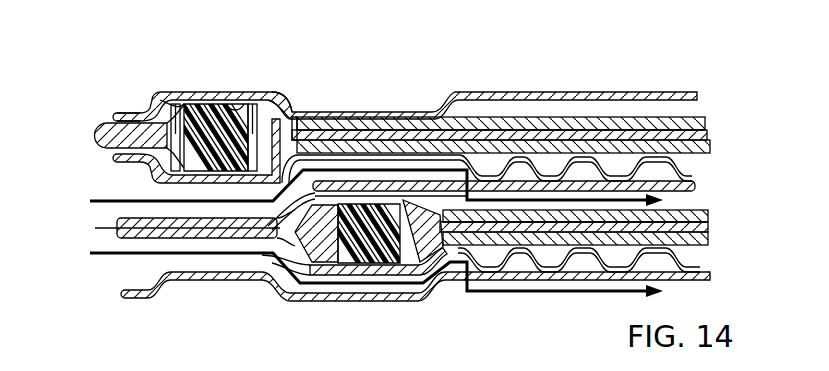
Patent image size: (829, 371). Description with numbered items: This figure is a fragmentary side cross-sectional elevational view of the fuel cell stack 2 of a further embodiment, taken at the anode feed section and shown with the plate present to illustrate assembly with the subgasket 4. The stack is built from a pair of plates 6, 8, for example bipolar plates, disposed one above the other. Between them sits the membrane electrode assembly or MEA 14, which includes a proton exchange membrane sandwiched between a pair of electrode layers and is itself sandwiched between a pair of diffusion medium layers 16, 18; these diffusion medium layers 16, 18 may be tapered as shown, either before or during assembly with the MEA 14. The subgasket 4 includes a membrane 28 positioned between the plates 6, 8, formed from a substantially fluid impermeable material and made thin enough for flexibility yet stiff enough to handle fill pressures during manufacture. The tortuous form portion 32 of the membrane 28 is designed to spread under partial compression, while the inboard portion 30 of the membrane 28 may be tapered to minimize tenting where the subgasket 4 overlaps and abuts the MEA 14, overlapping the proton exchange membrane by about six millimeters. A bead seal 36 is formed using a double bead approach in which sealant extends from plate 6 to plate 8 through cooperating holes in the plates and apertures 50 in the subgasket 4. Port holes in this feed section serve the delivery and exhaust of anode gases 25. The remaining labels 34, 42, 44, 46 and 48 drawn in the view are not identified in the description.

The fuel cell stack 2 is at (538, 65).
The subgasket 4 is at (121, 132).
The plate 6 is at (697, 92).
The plate 8 is at (695, 186).
The membrane electrode assembly 14 is at (708, 137).
The diffusion medium layer 16 is at (706, 128).
The diffusion medium layer 18 is at (710, 146).
The anode gases 25 is at (118, 188).
The membrane 28 is at (645, 133).
The inboard portion 30 is at (450, 128).
The tortuous form portion 32 is at (254, 146).
The housing wall 34 is at (150, 184).
The bead seal 36 is at (175, 147).
The flange 42 is at (168, 108).
The housing top shell 44 is at (188, 96).
The housing corner 46 is at (255, 104).
The seal body 48 is at (215, 101).
The apertures 50 is at (222, 117).